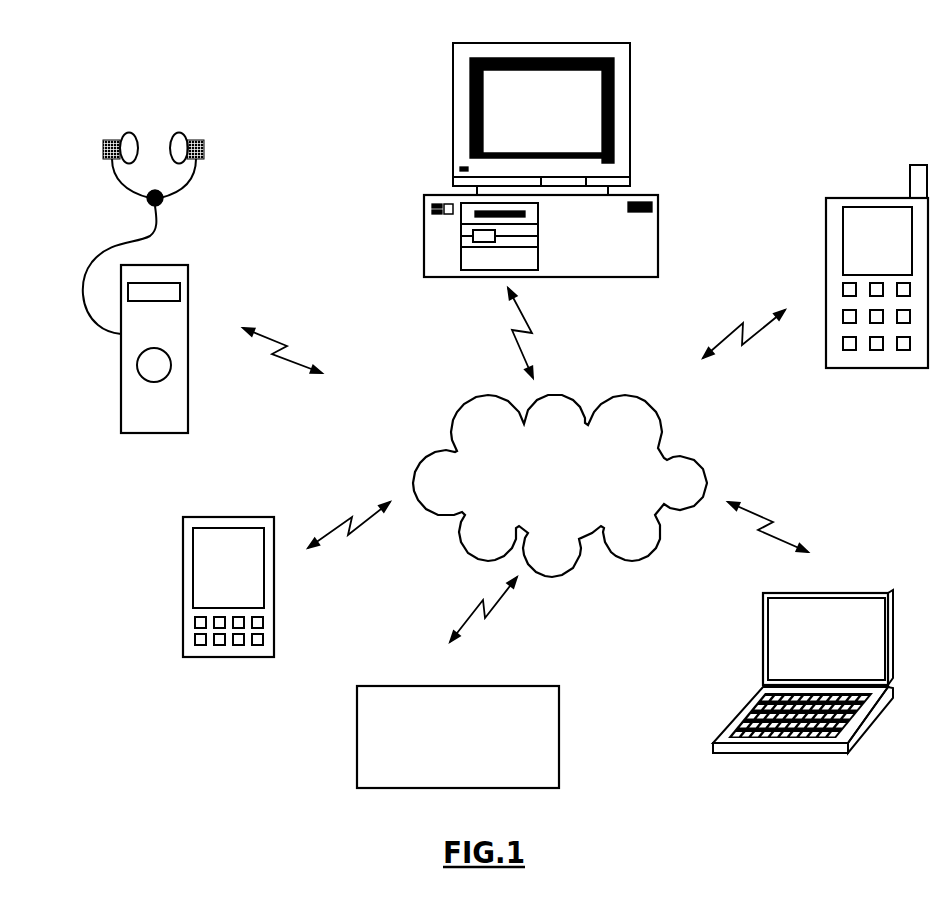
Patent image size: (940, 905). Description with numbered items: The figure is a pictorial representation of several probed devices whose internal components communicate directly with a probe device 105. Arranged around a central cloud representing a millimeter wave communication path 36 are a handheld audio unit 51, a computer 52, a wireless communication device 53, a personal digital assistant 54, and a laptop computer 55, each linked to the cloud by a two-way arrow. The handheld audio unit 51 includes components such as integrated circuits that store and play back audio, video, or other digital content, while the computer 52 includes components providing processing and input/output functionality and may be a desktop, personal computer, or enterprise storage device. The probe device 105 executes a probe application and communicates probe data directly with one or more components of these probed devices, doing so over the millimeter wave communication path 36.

The millimeter wave communication path 36 is at (546, 521).
The handheld audio unit 51 is at (143, 428).
The computer 52 is at (500, 133).
The wireless communication device 53 is at (865, 243).
The personal digital assistant 54 is at (219, 561).
The laptop computer 55 is at (798, 637).
The probe device 105 is at (440, 760).